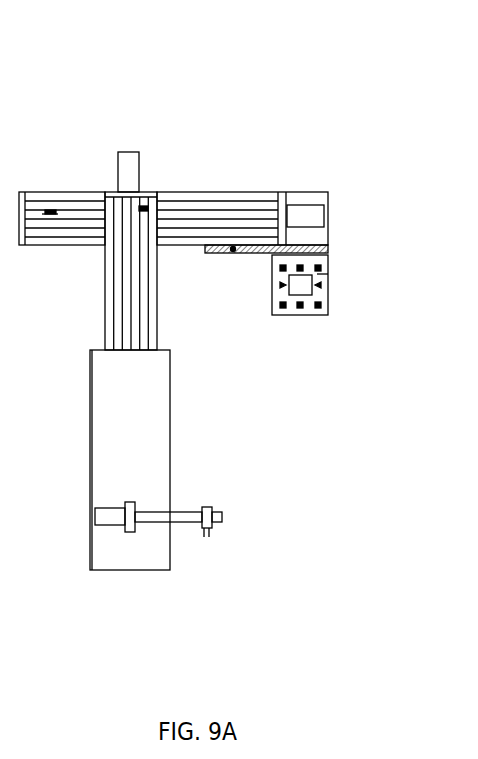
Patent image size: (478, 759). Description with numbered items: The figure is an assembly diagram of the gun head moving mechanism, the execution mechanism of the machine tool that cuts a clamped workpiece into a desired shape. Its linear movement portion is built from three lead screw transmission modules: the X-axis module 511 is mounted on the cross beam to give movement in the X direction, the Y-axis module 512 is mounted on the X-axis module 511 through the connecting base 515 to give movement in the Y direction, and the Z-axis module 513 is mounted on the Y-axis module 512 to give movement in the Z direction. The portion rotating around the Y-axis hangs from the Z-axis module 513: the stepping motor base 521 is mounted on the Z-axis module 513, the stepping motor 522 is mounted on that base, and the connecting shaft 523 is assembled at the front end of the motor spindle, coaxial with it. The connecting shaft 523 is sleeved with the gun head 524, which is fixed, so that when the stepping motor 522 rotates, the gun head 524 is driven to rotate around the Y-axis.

The X-axis module 511 is at (323, 274).
The Y-axis module 512 is at (50, 212).
The Z-axis module 513 is at (143, 208).
The connecting base 515 is at (233, 248).
The stepping motor base 521 is at (128, 517).
The stepping motor 522 is at (112, 517).
The connecting shaft 523 is at (138, 517).
The gun head 524 is at (215, 528).